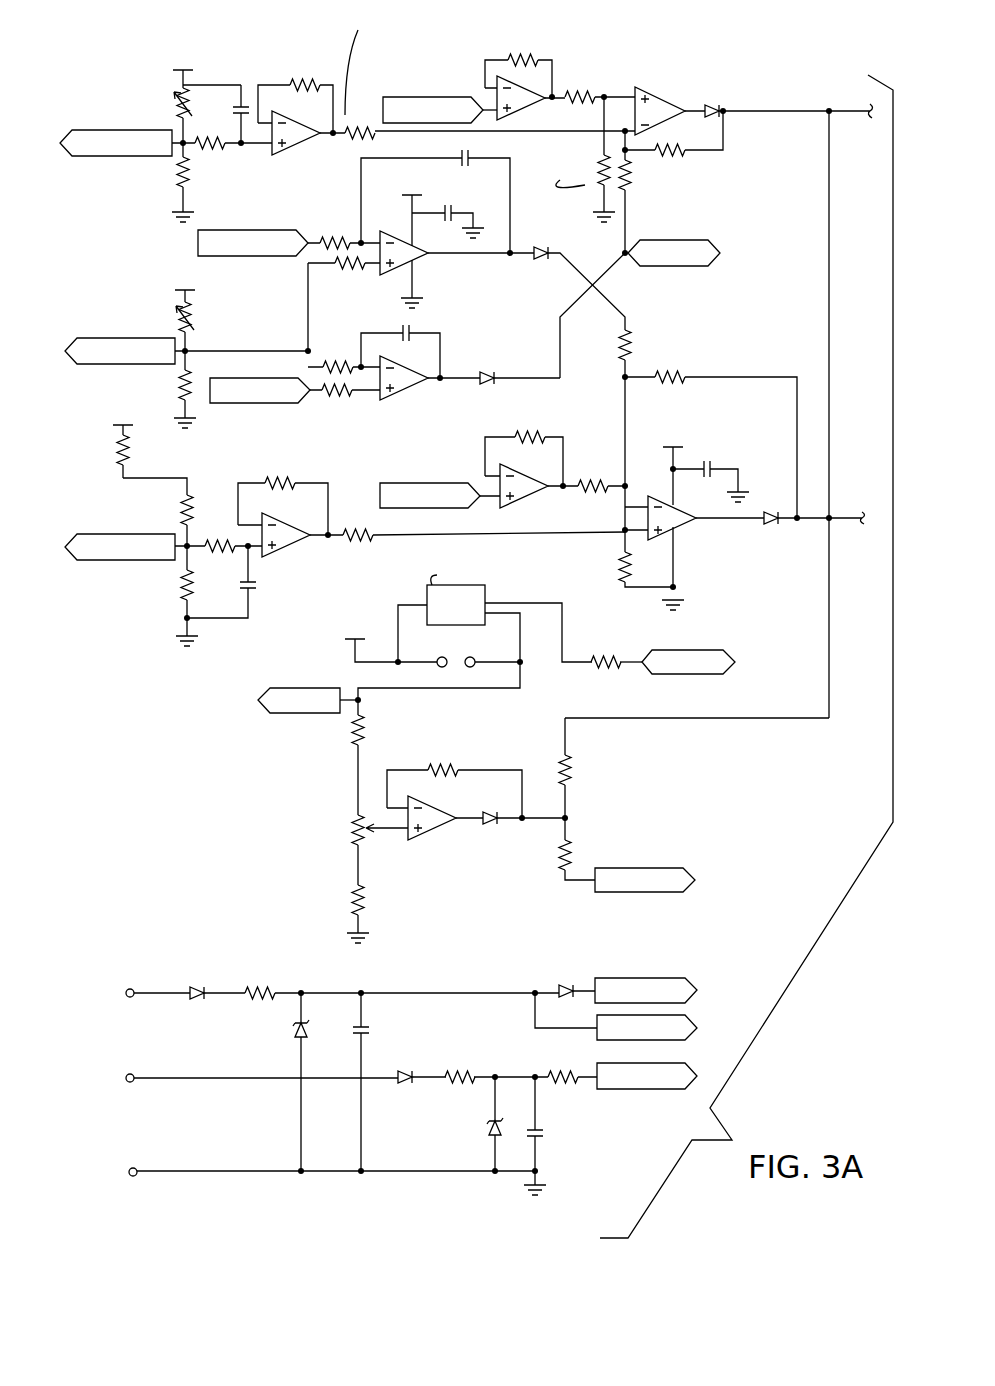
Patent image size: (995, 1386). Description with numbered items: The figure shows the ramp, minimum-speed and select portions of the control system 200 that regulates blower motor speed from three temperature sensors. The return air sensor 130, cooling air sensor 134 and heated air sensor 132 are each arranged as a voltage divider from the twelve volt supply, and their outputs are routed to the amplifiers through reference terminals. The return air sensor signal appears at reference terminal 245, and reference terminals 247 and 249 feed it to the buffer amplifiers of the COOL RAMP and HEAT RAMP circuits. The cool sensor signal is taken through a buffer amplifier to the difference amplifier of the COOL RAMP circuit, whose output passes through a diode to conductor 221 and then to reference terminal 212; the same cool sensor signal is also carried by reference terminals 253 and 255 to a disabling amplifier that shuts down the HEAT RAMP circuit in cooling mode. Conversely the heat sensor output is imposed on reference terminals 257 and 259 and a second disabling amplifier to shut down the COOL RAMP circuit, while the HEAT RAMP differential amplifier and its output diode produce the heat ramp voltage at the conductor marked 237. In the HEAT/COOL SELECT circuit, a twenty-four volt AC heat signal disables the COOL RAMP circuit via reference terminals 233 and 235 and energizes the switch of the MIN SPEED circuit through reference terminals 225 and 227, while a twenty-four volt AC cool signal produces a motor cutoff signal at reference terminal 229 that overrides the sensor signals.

The control system 200 is at (708, 25).
The cooling air sensor 134 is at (157, 79).
The reference terminal 253 is at (100, 160).
The reference terminal 247 is at (418, 96).
The conductor 221 is at (832, 108).
The reference terminal 255 is at (282, 212).
The reference terminal 235 is at (690, 268).
The return air sensor 130 is at (167, 292).
The reference terminal 245 is at (136, 338).
The heated air sensor 132 is at (107, 427).
The reference terminal 259 is at (228, 404).
The reference terminal 249 is at (415, 478).
The reference terminal 257 is at (112, 562).
The heat ramp output 237 is at (862, 525).
The reference terminal 227 is at (738, 656).
The reference terminal 212 is at (658, 866).
The reference terminal 233 is at (640, 977).
The reference terminal 225 is at (700, 1024).
The reference terminal 229 is at (626, 1090).